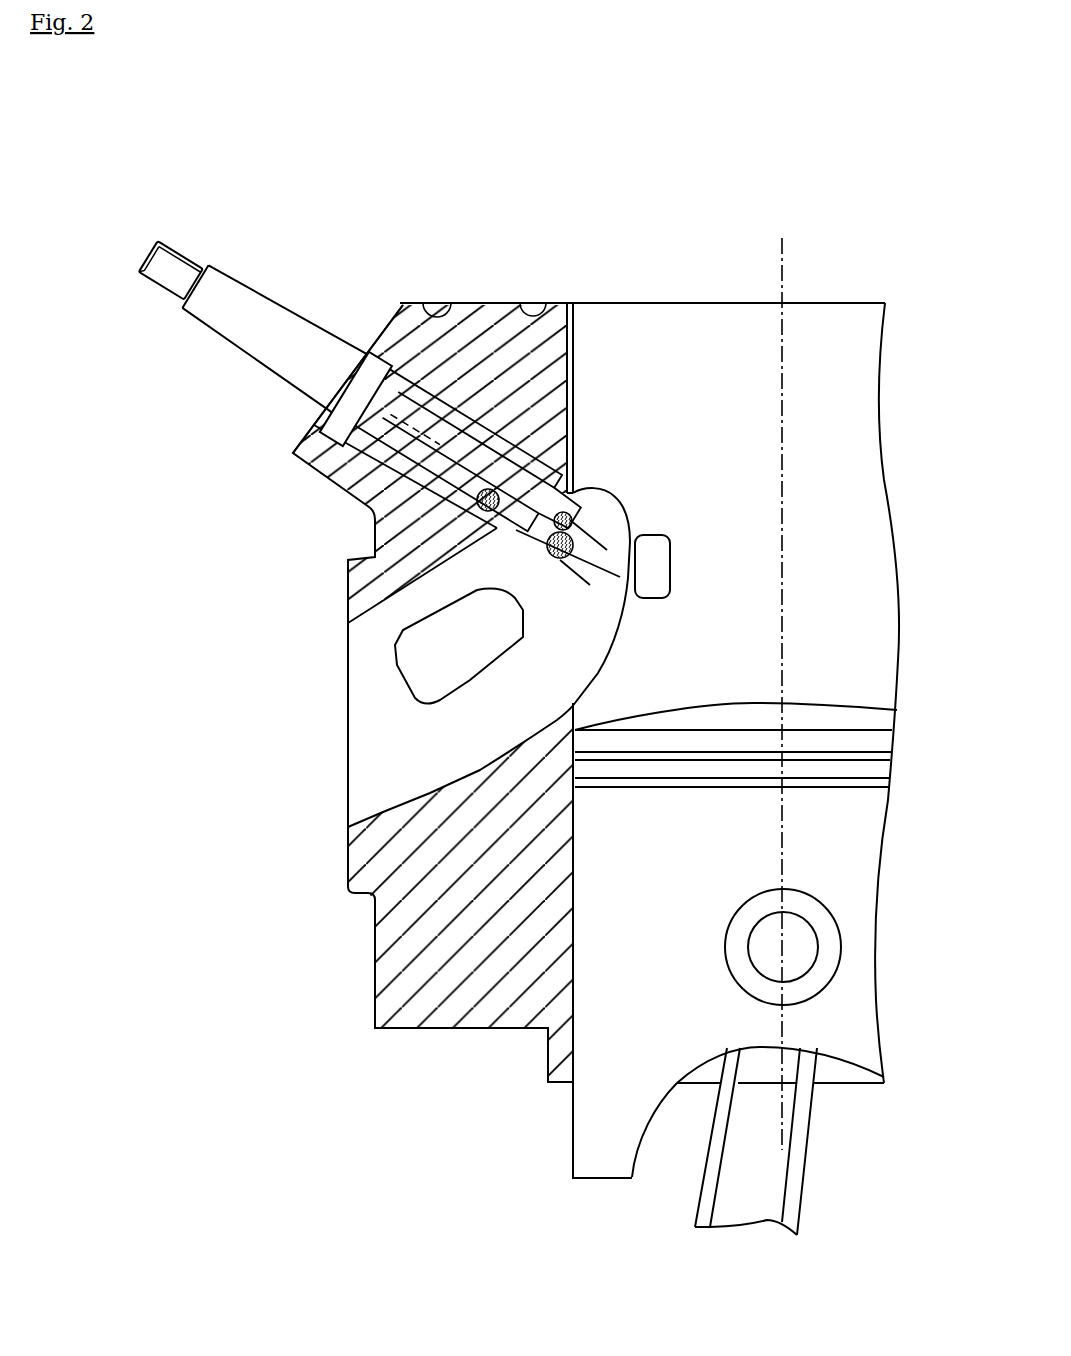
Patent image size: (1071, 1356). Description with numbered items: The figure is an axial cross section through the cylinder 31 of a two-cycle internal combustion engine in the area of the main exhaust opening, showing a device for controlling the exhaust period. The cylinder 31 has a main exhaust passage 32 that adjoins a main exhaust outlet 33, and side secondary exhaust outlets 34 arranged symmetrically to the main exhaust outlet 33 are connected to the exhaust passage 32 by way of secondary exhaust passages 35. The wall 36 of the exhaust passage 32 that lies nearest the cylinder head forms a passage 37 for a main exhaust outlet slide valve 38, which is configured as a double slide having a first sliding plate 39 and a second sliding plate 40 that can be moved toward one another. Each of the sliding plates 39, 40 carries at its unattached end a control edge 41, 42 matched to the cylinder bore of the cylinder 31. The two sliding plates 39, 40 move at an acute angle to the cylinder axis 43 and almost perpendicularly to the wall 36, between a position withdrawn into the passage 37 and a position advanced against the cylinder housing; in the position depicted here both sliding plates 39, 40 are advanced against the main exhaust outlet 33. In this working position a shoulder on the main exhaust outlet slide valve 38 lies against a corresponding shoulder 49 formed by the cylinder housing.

The cylinder 31 is at (636, 350).
The main exhaust passage 32 is at (383, 768).
The main exhaust outlet 33 is at (614, 497).
The side secondary exhaust outlets 34 is at (678, 565).
The secondary exhaust passages 35 is at (438, 665).
The wall 36 is at (563, 500).
The passage 37 is at (560, 507).
The main exhaust outlet slide valve 38 is at (342, 325).
The first sliding plate 39 is at (540, 545).
The second sliding plate 40 is at (550, 510).
The control edge 41 is at (605, 580).
The control edge 42 is at (572, 510).
The cylinder axis 43 is at (786, 262).
The shoulder 49 is at (398, 303).